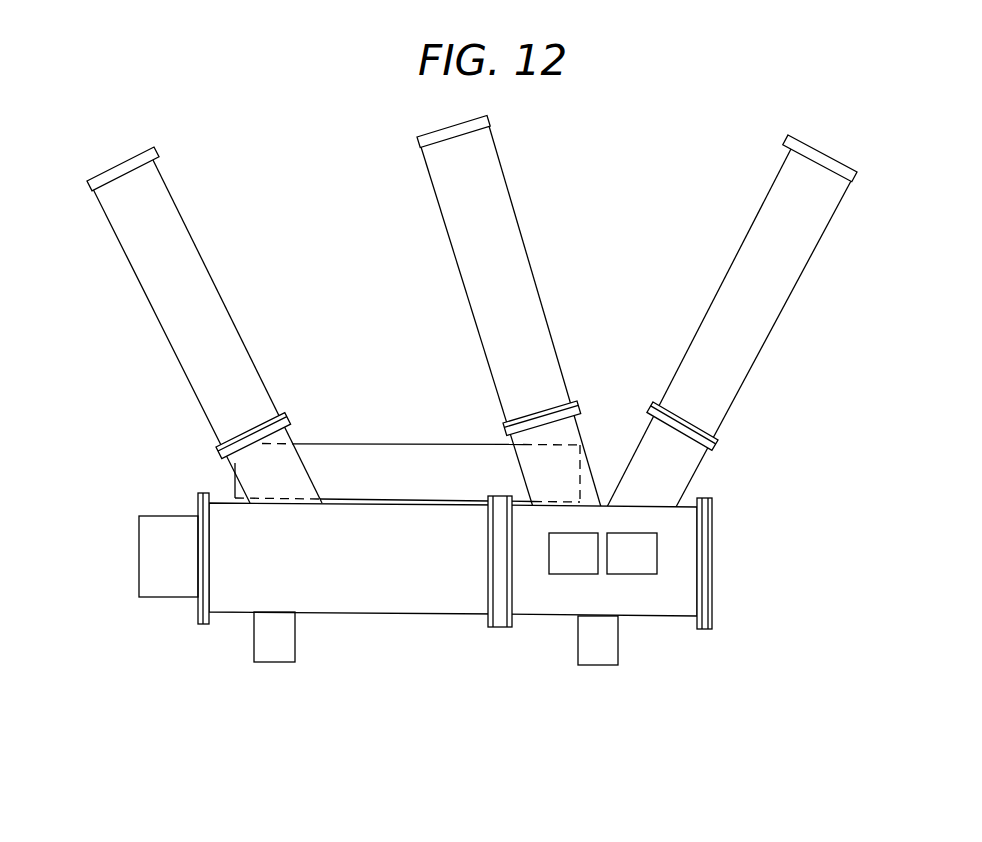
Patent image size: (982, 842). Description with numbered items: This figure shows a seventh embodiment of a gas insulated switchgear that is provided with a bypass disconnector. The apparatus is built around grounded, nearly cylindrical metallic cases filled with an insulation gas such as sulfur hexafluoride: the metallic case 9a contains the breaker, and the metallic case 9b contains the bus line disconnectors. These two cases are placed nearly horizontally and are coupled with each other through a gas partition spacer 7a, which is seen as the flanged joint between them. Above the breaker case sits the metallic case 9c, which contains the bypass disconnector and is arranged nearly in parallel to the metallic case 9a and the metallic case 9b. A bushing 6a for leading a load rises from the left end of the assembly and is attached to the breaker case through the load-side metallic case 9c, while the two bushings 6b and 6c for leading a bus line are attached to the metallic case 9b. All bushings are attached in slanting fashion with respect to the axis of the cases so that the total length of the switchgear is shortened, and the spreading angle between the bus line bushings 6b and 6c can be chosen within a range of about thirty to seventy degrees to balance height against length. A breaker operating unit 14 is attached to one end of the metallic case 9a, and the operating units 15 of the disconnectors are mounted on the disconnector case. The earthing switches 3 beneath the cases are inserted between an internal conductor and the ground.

The earthing switch 3 is at (275, 664).
The bushing for leading a load 6a is at (223, 300).
The bushing for leading a bus line 6b is at (532, 272).
The bushing for leading a bus line 6c is at (750, 368).
The gas partition spacer 7a is at (497, 629).
The metallic case 9a is at (355, 616).
The metallic case 9b is at (542, 618).
The metallic case 9c is at (382, 443).
The breaker operating unit 14 is at (139, 558).
The operating unit of disconnector 15 is at (658, 555).